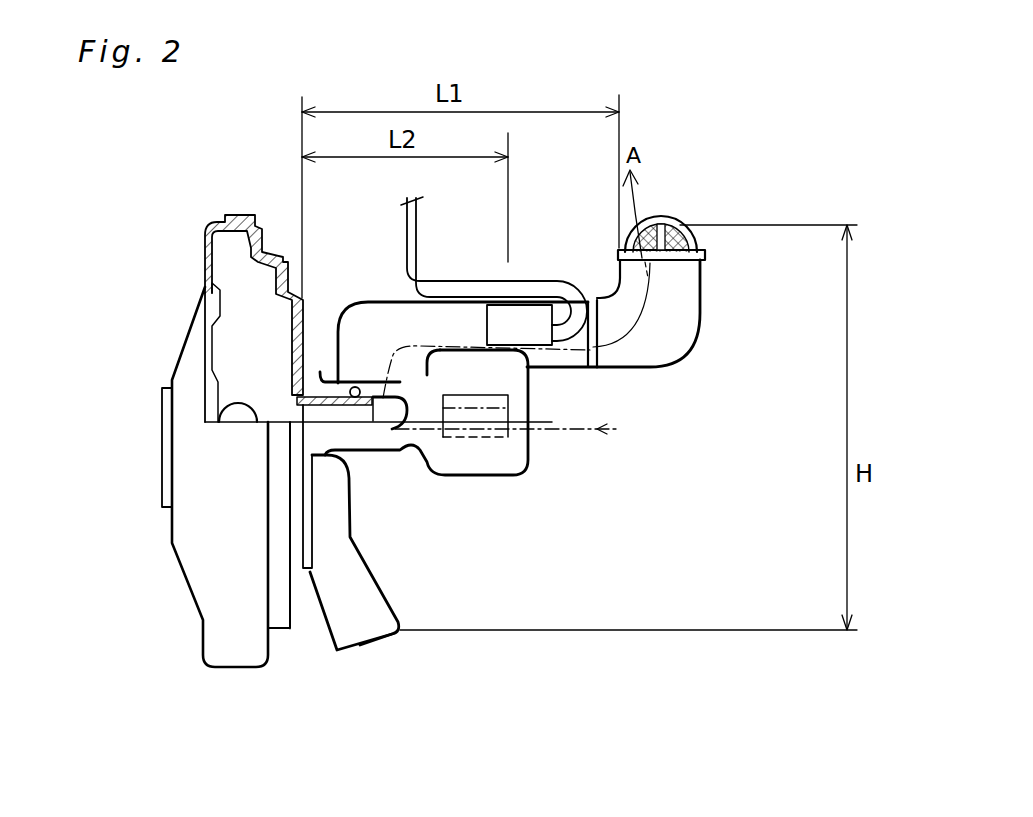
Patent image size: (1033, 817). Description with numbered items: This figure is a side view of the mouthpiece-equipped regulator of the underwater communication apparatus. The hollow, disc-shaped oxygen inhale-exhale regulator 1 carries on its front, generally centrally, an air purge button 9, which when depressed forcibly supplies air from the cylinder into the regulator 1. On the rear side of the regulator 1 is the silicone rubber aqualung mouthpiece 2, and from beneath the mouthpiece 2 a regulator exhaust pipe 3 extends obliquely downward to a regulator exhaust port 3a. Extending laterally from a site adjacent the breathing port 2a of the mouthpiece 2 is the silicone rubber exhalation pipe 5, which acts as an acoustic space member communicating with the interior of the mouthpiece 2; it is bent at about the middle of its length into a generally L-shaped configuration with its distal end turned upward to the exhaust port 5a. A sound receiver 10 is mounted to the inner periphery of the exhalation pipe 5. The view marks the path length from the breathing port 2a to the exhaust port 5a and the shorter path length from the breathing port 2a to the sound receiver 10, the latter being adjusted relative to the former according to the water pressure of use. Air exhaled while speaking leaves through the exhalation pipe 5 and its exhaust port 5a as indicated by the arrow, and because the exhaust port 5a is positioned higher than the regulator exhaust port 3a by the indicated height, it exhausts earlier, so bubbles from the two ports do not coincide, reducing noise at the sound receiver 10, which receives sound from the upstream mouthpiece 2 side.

The oxygen inhale-exhale regulator 1 is at (186, 344).
The air purge button 9 is at (160, 428).
The aqualung mouthpiece 2 is at (517, 462).
The breathing port 2a is at (352, 410).
The regulator exhaust pipe 3 is at (347, 586).
The regulator exhaust port 3a is at (373, 650).
The exhalation pipe 5 is at (670, 340).
The exhaust port 5a is at (675, 232).
The sound receiver 10 is at (538, 333).